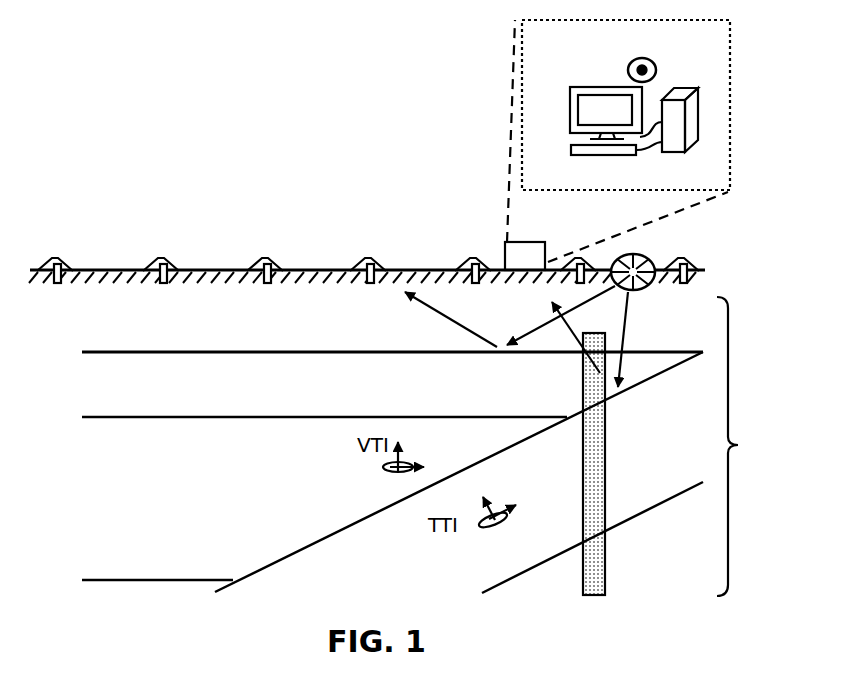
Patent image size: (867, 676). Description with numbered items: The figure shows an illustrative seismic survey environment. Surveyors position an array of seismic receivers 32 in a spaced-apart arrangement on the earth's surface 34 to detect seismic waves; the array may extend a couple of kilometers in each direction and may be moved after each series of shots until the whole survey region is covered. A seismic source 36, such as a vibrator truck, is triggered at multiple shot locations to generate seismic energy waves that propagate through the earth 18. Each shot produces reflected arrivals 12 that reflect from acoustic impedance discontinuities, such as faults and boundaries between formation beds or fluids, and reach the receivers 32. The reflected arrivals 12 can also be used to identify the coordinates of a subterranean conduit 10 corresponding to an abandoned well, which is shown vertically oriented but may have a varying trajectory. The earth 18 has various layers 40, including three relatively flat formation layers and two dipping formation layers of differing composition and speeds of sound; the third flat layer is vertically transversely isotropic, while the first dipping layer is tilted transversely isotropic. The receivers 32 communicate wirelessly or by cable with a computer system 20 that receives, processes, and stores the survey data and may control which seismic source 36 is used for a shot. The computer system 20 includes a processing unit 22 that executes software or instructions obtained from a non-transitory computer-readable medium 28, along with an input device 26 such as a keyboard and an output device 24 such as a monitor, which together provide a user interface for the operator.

The subterranean conduit 10 is at (606, 482).
The reflected arrivals 12 is at (445, 318).
The earth 18 is at (56, 328).
The computer system 20 is at (733, 110).
The processing unit 22 is at (688, 86).
The output device 24 is at (570, 112).
The input device 26 is at (625, 152).
The non-transitory computer-readable medium 28 is at (636, 58).
The seismic receivers 32 is at (153, 267).
The earth's surface 34 is at (47, 270).
The seismic source 36 is at (648, 256).
The layers 40 is at (428, 446).